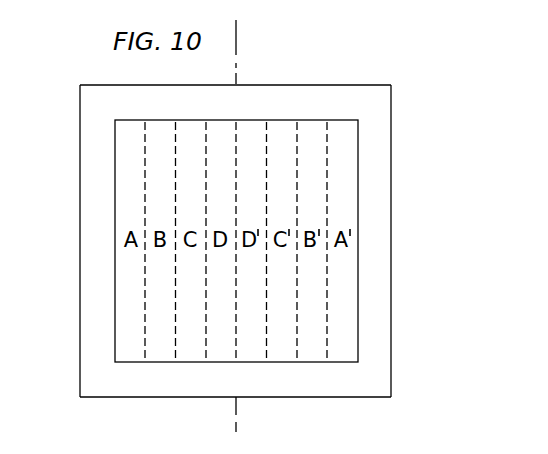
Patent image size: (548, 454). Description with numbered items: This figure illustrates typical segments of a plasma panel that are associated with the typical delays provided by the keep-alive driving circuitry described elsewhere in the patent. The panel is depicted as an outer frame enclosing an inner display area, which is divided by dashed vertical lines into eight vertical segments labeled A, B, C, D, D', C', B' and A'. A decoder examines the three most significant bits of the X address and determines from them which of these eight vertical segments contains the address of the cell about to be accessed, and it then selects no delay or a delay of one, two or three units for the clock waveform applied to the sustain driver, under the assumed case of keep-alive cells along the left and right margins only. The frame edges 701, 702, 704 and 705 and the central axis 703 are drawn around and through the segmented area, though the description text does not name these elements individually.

The left side of frame 701 is at (88, 197).
The right side of frame 702 is at (383, 204).
The center axis line 703 is at (237, 45).
The top side of frame 704 is at (327, 97).
The bottom side of frame 705 is at (264, 388).